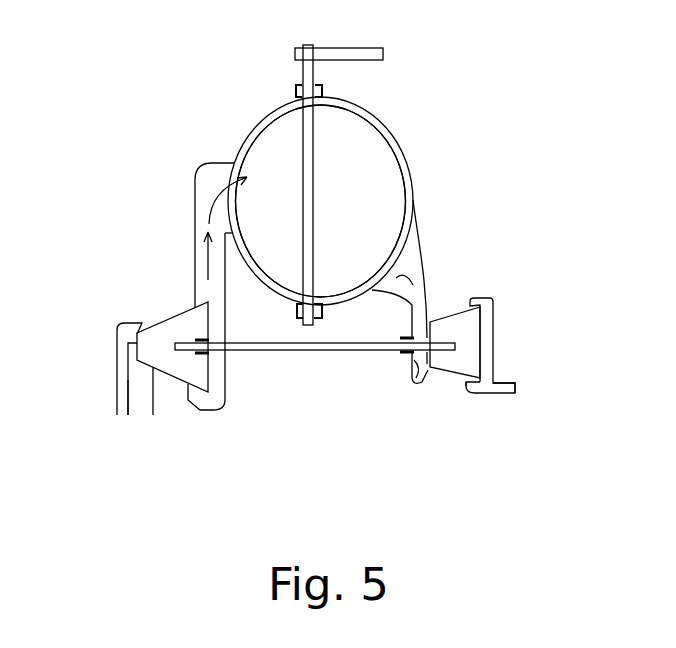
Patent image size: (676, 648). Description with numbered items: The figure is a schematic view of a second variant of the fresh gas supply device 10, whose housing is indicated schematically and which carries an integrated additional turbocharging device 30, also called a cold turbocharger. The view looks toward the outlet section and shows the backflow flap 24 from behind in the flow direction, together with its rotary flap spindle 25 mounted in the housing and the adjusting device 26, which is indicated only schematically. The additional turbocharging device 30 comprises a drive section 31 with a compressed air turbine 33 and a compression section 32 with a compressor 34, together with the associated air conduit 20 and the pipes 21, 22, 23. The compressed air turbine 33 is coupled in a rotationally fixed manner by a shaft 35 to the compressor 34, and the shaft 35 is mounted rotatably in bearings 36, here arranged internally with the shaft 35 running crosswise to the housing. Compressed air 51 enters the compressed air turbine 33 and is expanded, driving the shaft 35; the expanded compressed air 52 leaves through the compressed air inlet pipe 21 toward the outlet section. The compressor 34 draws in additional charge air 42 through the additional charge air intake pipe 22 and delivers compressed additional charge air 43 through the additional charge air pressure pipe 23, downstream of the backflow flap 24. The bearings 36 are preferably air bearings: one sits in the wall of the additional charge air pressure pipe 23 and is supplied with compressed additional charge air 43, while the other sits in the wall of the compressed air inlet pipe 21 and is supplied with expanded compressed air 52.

The fresh gas supply device 10 is at (410, 156).
The air conduit 20 is at (505, 381).
The compressed air inlet pipe 21 is at (424, 292).
The additional charge air intake pipe 22 is at (126, 351).
The additional charge air pressure pipe 23 is at (194, 180).
The backflow flap 24 is at (362, 140).
The rotary flap spindle 25 is at (308, 152).
The adjusting device 26 is at (362, 55).
The additional turbocharging device 30 is at (113, 214).
The drive section 31 is at (447, 402).
The compression section 32 is at (176, 402).
The compressed air turbine 33 is at (467, 324).
The compressor 34 is at (165, 330).
The shaft 35 is at (337, 352).
The bearings 36 is at (233, 357).
The additional charge air 42 is at (127, 385).
The compressed additional charge air 43 is at (223, 193).
The compressed air 51 is at (526, 392).
The expanded compressed air 52 is at (402, 284).